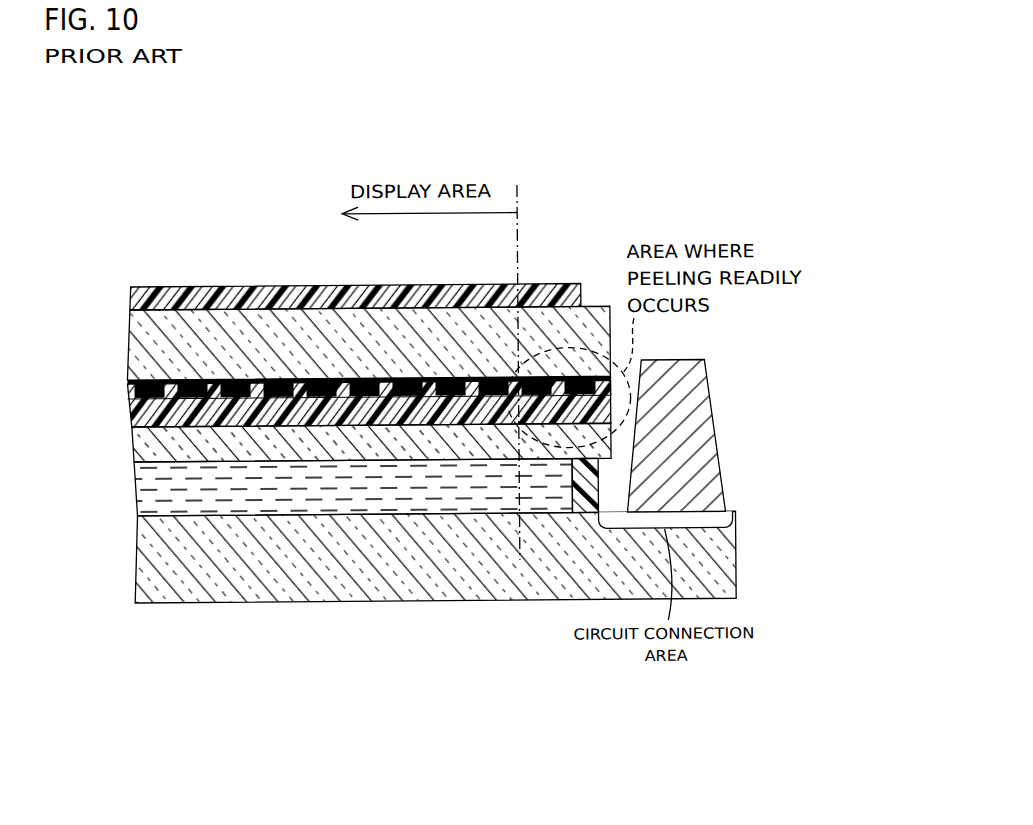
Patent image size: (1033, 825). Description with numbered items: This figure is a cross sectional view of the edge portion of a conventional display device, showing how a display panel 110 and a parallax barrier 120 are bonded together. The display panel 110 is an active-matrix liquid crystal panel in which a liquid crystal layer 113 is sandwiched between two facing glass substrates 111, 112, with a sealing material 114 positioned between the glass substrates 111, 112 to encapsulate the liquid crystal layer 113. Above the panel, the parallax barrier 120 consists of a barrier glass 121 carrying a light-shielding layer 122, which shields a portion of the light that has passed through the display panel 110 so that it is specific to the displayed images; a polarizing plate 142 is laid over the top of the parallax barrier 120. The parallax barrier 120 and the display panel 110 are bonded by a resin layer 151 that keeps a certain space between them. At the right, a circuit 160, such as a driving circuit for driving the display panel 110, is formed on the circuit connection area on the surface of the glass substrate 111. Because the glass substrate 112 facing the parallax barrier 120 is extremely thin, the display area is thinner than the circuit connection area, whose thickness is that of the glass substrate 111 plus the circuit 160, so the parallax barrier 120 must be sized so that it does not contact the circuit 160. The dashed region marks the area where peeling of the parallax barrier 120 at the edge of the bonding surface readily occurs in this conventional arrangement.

The display panel 110 is at (386, 575).
The glass substrate 111 is at (405, 557).
The glass substrate 112 is at (132, 452).
The liquid crystal layer 113 is at (132, 495).
The sealing material 114 is at (585, 508).
The parallax barrier 120 is at (307, 371).
The barrier glass 121 is at (129, 353).
The light-shielding layer 122 is at (340, 389).
The polarizing plate 142 is at (131, 299).
The resin layer 151 is at (131, 418).
The circuit 160 is at (712, 382).